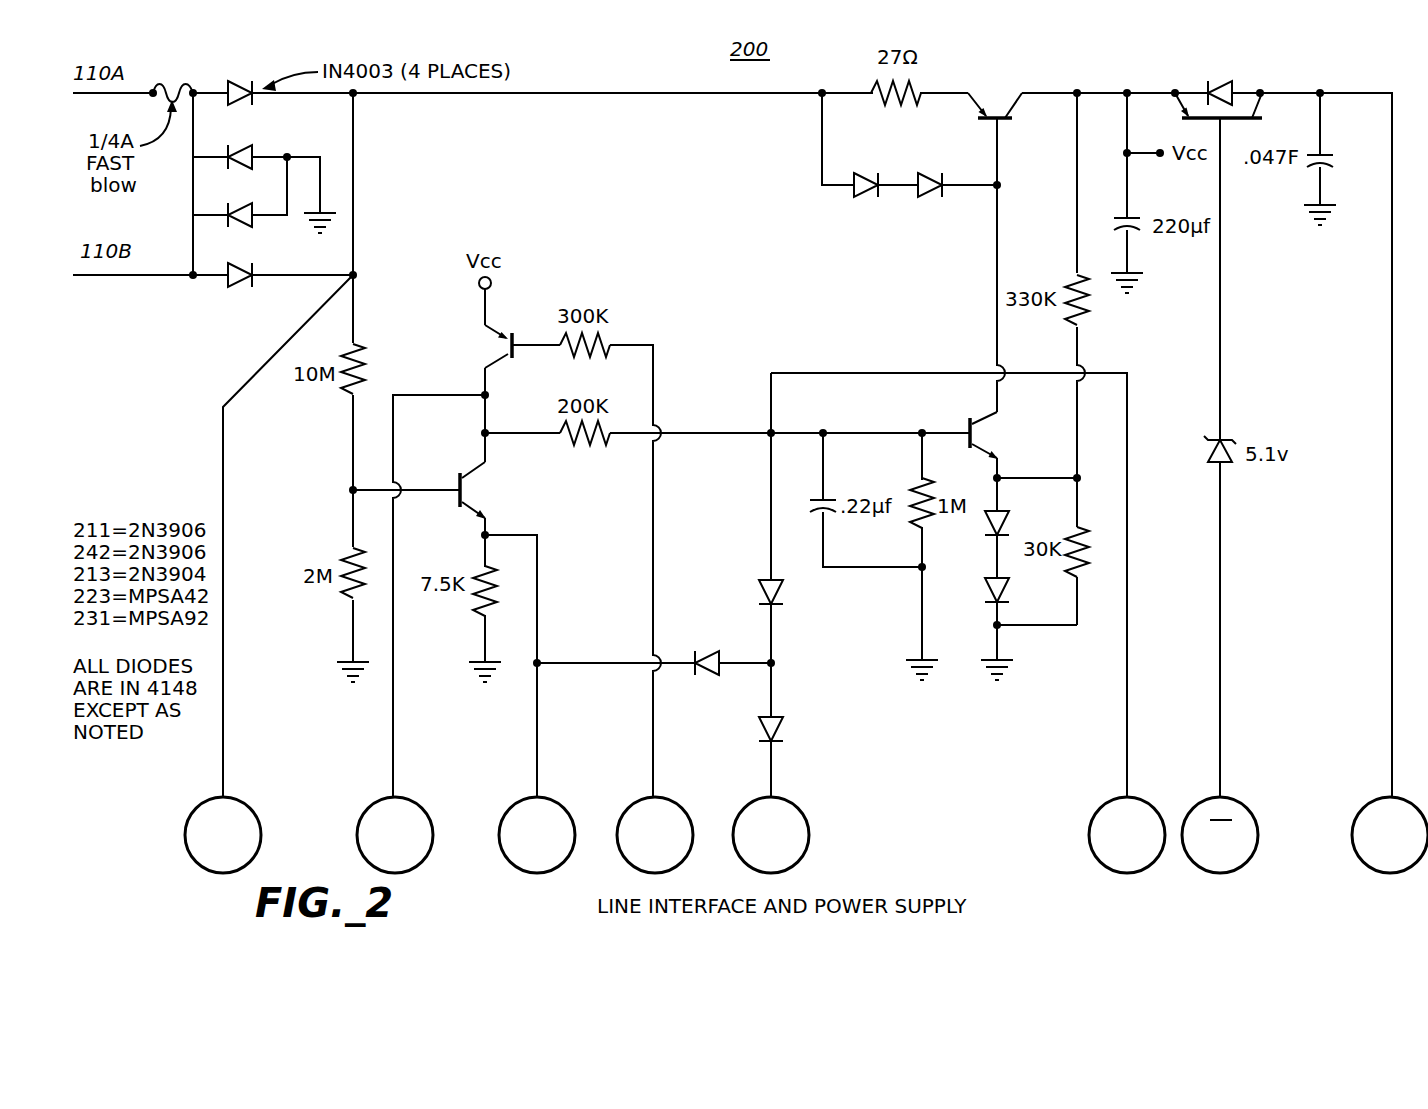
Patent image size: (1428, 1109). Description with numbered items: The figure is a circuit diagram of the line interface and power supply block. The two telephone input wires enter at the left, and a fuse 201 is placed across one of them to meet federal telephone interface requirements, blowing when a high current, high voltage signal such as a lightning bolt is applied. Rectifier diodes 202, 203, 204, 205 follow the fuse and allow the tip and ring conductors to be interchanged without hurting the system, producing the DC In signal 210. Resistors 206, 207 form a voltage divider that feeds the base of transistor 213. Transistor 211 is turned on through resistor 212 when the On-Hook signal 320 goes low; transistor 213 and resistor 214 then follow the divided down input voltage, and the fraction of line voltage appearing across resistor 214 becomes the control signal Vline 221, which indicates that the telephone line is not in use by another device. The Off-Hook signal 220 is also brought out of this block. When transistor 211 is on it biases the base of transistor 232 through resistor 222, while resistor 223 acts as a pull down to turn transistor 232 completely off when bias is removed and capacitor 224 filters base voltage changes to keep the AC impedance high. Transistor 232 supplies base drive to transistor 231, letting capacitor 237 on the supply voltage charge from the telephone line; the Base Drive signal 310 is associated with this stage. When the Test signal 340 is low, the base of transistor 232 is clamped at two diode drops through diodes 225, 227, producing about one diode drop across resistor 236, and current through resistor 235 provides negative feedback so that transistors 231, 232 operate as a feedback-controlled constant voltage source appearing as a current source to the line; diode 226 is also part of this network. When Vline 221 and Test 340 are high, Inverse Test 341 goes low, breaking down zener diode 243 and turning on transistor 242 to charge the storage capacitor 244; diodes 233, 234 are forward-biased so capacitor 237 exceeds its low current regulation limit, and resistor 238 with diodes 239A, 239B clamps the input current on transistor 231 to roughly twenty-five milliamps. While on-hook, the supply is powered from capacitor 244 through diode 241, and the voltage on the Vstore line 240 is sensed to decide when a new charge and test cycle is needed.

The fuse 201 is at (173, 86).
The rectifier diode 202 is at (245, 82).
The rectifier diode 203 is at (243, 150).
The rectifier diode 204 is at (238, 206).
The rectifier diode 205 is at (243, 265).
The resistor 206 is at (370, 360).
The resistor 207 is at (338, 590).
The DC In signal 210 is at (250, 810).
The transistor 211 is at (506, 350).
The resistor 212 is at (577, 366).
The transistor 213 is at (480, 496).
The resistor 214 is at (480, 606).
The Off-Hook signal 220 is at (422, 810).
The Vline control signal 221 is at (562, 810).
The resistor 222 is at (585, 452).
The resistor 223 is at (918, 526).
The capacitor 224 is at (828, 494).
The diode 225 is at (783, 590).
The diode 226 is at (708, 650).
The diode 227 is at (783, 727).
The transistor 231 is at (997, 112).
The transistor 232 is at (985, 434).
The diode 233 is at (988, 532).
The diode 234 is at (988, 597).
The resistor 235 is at (1088, 318).
The resistor 236 is at (1070, 586).
The capacitor 237 is at (1135, 212).
The resistor 238 is at (885, 105).
The diode 239A is at (868, 200).
The diode 239B is at (930, 200).
The Vstore line 240 is at (1366, 803).
The diode 241 is at (1216, 80).
The transistor 242 is at (1210, 112).
The zener diode 243 is at (1232, 440).
The storage capacitor 244 is at (1328, 150).
The Base Drive signal 310 is at (1100, 803).
The On-Hook signal 320 is at (682, 810).
The Test signal 340 is at (800, 810).
The Inverse Test signal 341 is at (1200, 803).